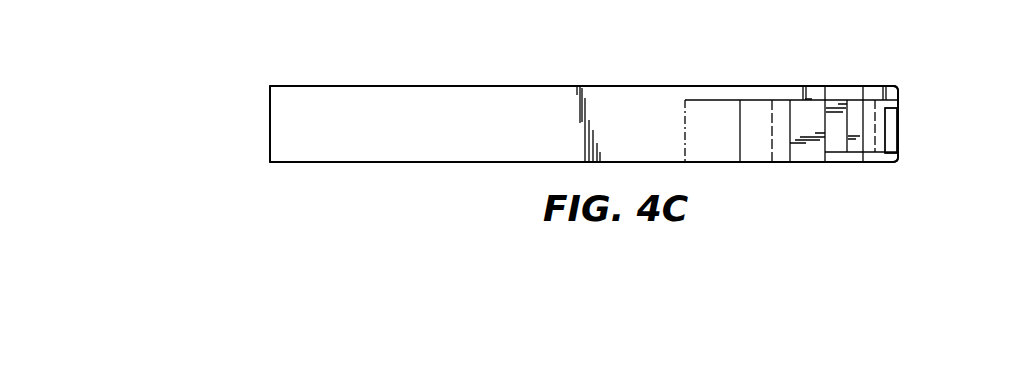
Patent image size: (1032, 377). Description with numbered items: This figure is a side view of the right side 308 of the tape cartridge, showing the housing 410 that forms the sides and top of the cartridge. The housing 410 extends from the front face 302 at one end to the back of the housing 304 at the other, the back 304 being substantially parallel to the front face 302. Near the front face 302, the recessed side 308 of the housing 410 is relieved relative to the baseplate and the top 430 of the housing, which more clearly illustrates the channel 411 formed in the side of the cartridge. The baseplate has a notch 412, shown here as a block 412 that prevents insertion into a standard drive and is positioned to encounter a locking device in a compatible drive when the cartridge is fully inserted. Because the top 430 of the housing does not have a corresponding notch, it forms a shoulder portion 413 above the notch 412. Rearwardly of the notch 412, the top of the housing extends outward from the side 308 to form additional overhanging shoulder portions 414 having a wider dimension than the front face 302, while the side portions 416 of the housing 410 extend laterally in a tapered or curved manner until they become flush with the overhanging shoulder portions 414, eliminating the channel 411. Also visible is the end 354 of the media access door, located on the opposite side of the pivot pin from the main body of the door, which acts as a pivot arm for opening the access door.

The front face 302 is at (916, 113).
The back of the housing 304 is at (258, 106).
The right side 308 is at (528, 153).
The end of the media access door 354 is at (890, 155).
The housing 410 is at (431, 70).
The channel 411 is at (916, 141).
The notch 412 is at (837, 158).
The shoulder portion 413 is at (857, 93).
The overhanging shoulder portions 414 is at (739, 93).
The side portions 416 is at (750, 153).
The top of the housing 430 is at (625, 70).